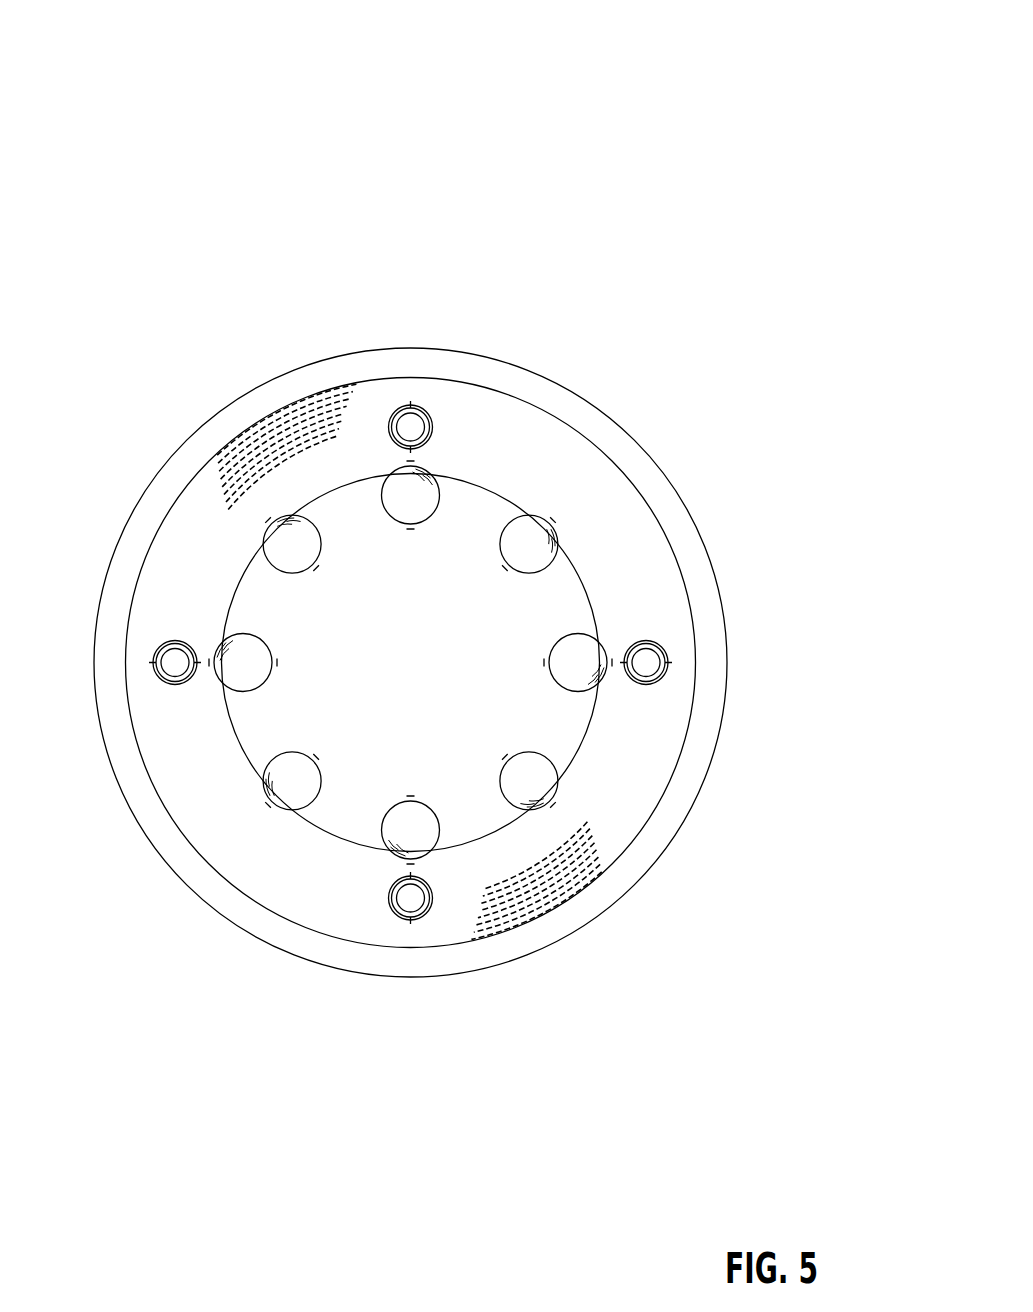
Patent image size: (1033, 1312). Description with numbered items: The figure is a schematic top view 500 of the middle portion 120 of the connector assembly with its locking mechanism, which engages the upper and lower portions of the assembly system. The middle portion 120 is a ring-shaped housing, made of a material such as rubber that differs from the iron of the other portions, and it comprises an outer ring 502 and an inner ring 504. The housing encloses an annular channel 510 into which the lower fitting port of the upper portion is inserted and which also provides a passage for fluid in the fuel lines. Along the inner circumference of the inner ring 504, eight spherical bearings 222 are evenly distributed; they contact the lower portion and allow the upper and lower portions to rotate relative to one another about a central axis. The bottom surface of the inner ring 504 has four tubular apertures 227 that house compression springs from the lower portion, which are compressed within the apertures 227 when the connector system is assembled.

The top view 500 is at (700, 33).
The middle portion 120 is at (710, 99).
The spherical bearings 222 is at (293, 510).
The tubular apertures 227 is at (403, 417).
The outer ring 502 is at (588, 402).
The inner ring 504 is at (532, 905).
The annular channel 510 is at (452, 743).